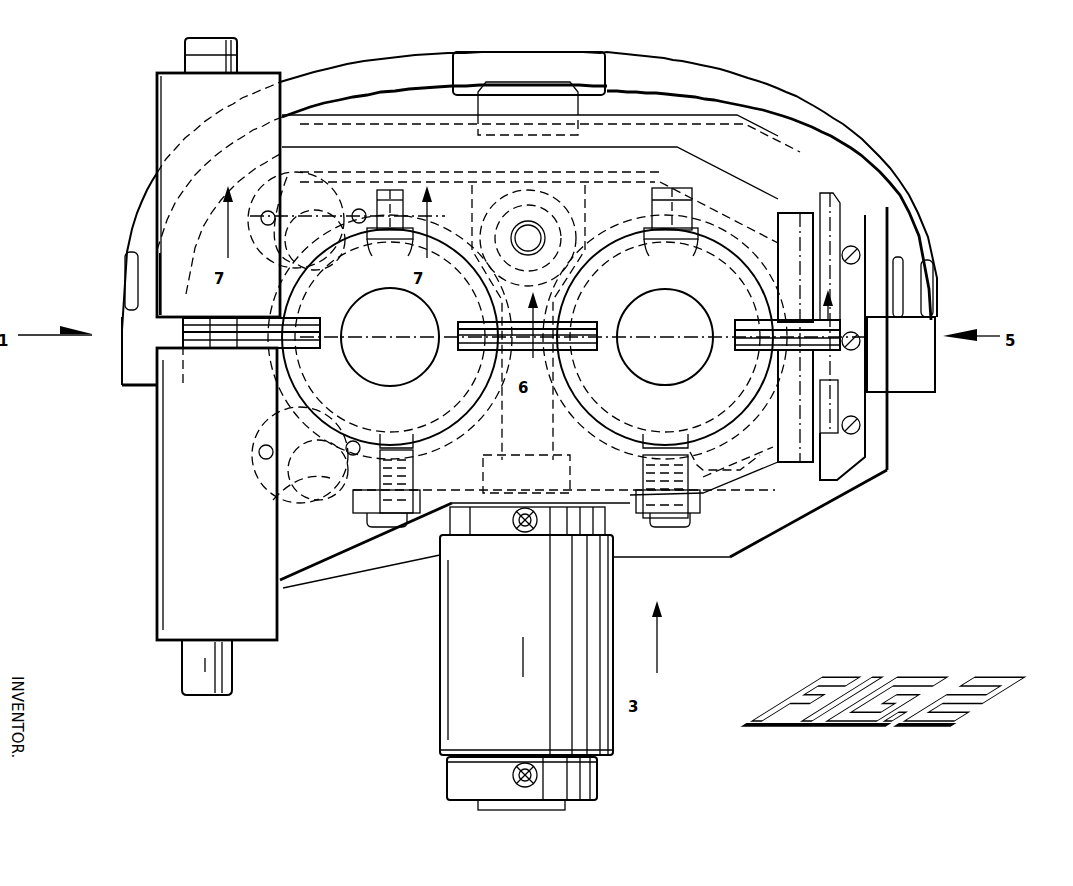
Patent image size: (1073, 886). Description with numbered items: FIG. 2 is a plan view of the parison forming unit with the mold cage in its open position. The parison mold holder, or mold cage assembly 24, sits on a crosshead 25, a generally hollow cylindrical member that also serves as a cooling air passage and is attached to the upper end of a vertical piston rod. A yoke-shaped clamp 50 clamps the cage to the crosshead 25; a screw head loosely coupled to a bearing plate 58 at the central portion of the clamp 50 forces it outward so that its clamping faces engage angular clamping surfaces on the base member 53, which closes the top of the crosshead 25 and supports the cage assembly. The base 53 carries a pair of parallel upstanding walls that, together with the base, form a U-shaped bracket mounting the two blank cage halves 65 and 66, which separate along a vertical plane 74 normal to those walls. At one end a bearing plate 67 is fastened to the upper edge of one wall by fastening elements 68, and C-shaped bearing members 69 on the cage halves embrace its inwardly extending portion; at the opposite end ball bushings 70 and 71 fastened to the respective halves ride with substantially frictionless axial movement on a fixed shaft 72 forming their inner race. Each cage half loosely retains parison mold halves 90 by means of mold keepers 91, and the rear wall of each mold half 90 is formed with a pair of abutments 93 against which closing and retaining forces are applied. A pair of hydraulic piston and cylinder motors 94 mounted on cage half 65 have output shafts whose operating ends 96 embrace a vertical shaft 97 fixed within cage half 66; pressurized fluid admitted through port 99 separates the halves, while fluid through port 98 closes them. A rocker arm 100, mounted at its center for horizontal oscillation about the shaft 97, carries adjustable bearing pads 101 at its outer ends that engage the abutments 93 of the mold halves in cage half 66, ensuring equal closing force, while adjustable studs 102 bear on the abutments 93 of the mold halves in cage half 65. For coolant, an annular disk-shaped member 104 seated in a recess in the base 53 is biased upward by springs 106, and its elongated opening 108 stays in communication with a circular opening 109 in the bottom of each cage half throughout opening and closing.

The parison mold holder 24 is at (768, 486).
The crosshead 25 is at (883, 512).
The yoke-shaped clamp 50 is at (916, 225).
The base member 53 is at (862, 477).
The bearing plate 58 is at (570, 98).
The blank cage half 65 is at (718, 490).
The blank cage half 66 is at (792, 200).
The bearing plate 67 is at (855, 453).
The fastening elements 68 is at (862, 253).
The C-shaped bearing members 69 is at (828, 247).
The ball bushing 70 is at (168, 478).
The ball bushing 71 is at (183, 110).
The fixed shaft 72 is at (200, 663).
The vertical plane 74 is at (632, 330).
The parison mold halves 90 is at (435, 298).
The mold keepers 91 is at (273, 323).
The abutments 93 is at (383, 244).
The hydraulic piston and cylinder motors 94 is at (458, 658).
The operating ends 96 is at (553, 210).
The vertical shaft 97 is at (529, 238).
The port 98 is at (524, 532).
The port 99 is at (525, 762).
The rocker arm 100 is at (678, 170).
The adjustable bearing pads 101 is at (385, 192).
The adjustable studs 102 is at (378, 522).
The annular disk shaped element 104 is at (280, 267).
The springs 106 is at (353, 212).
The elongated opening 108 is at (287, 177).
The circular opening 109 is at (233, 480).